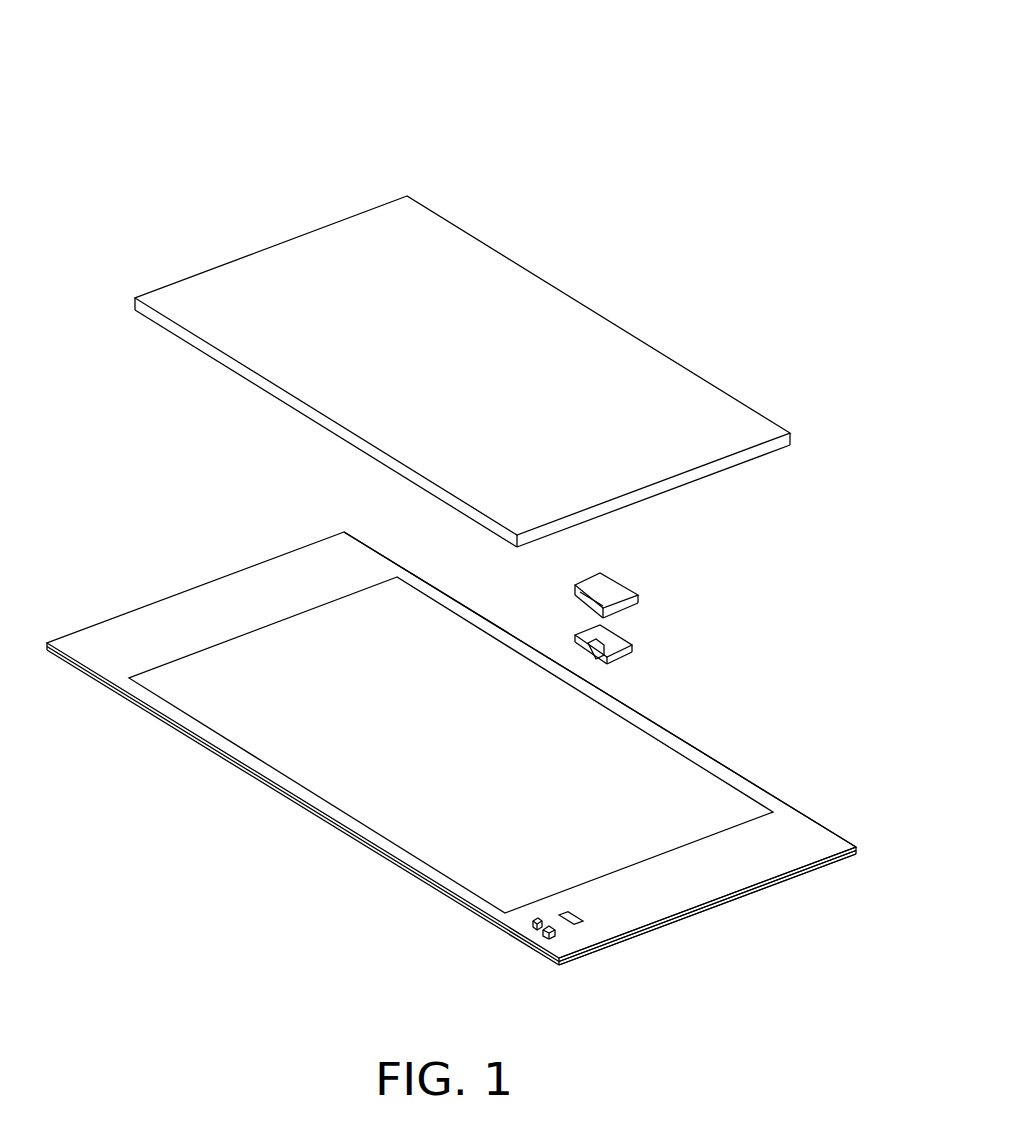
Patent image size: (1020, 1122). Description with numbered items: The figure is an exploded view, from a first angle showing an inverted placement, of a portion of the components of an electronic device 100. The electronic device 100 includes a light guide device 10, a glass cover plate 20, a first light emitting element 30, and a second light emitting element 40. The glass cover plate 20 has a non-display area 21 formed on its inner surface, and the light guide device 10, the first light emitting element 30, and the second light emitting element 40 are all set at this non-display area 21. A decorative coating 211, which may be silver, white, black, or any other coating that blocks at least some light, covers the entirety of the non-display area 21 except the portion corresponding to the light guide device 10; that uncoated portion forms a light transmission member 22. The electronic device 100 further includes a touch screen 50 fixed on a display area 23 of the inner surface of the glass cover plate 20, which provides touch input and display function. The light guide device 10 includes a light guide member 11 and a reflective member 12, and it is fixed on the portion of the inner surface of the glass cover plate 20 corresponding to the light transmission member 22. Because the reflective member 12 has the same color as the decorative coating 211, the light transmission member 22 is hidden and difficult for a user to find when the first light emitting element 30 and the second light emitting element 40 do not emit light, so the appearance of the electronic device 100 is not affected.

The electronic device 100 is at (356, 74).
The touch screen 50 is at (568, 328).
The glass cover plate 20 is at (722, 738).
The non-display area 21 is at (787, 843).
The decorative coating 211 is at (772, 885).
The display area 23 is at (628, 742).
The light transmission member 22 is at (587, 923).
The first light emitting element 30 is at (533, 925).
The second light emitting element 40 is at (548, 937).
The light guide device 10 is at (672, 550).
The reflective member 12 is at (610, 585).
The light guide member 11 is at (607, 640).